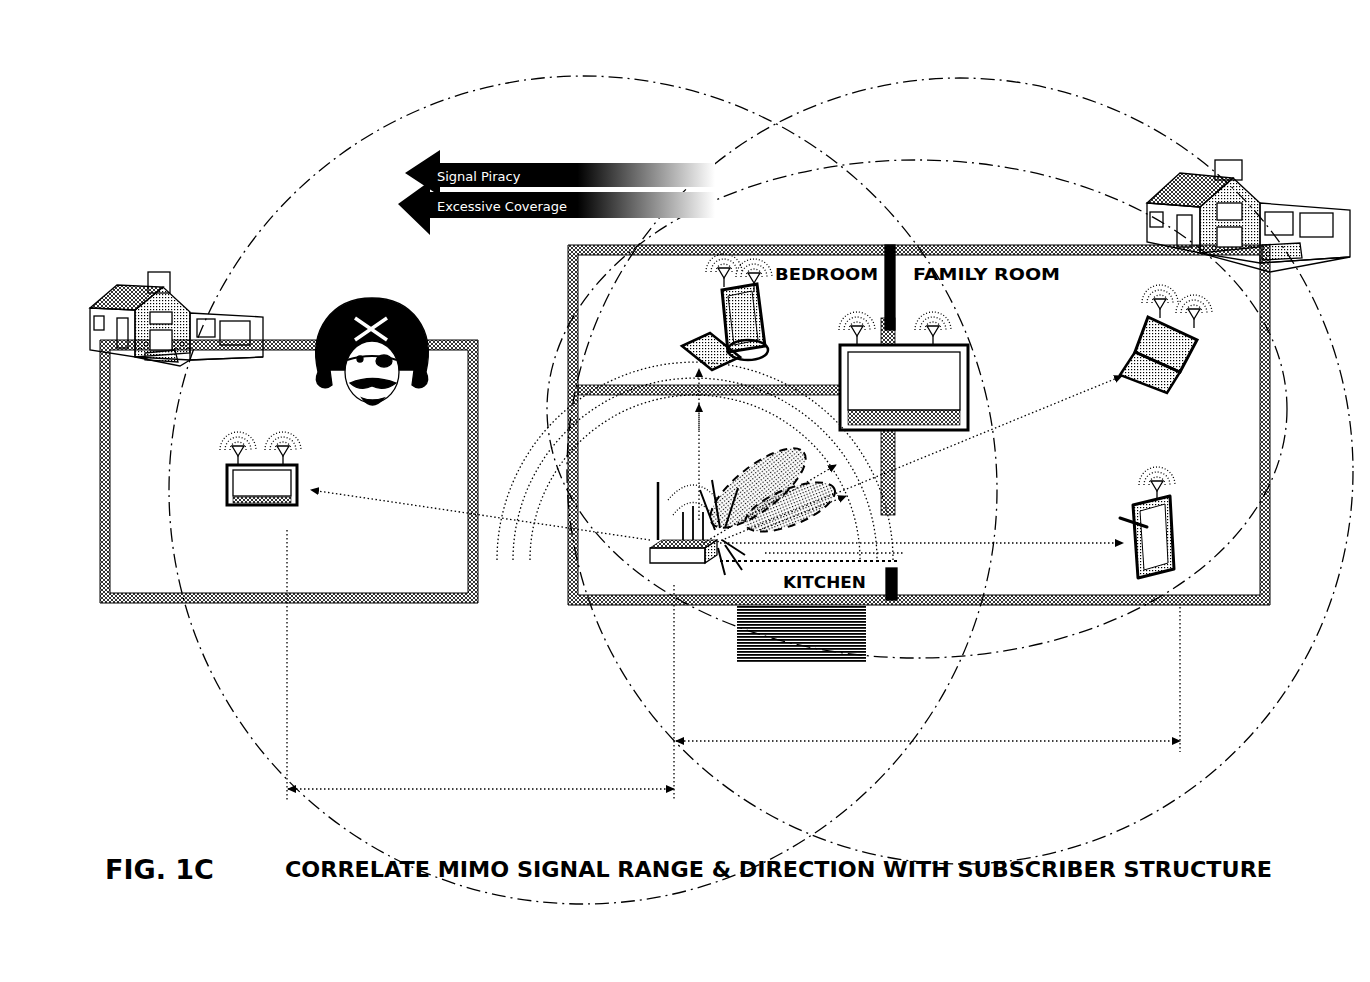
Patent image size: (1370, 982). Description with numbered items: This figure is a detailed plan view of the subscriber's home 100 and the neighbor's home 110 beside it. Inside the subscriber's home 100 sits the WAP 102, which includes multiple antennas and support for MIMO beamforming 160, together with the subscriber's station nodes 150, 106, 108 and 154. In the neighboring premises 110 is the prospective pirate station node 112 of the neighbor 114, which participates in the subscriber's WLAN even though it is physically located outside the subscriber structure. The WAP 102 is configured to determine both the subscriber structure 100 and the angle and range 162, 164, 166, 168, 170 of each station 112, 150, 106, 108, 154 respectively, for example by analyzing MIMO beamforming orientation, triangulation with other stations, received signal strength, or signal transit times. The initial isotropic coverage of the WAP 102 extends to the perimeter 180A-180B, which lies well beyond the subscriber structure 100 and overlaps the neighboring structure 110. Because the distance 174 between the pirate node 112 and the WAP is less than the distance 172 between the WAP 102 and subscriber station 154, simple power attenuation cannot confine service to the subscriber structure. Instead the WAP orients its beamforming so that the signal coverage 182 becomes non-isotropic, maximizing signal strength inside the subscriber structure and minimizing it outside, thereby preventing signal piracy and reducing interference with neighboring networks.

The subscriber's home 100 is at (1142, 213).
The WAP 102 is at (650, 554).
The station node 106 is at (968, 362).
The station node 108 is at (1152, 386).
The neighbor's home 110 is at (287, 337).
The prospective pirate station node 112 is at (262, 504).
The neighbor 114 is at (406, 331).
The station node 150 is at (722, 312).
The station node 154 is at (1133, 512).
The MIMO beamforming 160 is at (737, 500).
The angle and range 162 is at (480, 515).
The angle and range 164 is at (689, 444).
The angle and range 166 is at (773, 501).
The angle and range 168 is at (916, 460).
The angle and range 170 is at (921, 542).
The distance 172 is at (928, 741).
The distance 174 is at (481, 789).
The perimeter 180A is at (253, 732).
The perimeter 180B is at (1250, 733).
The signal coverage 182 is at (1055, 638).